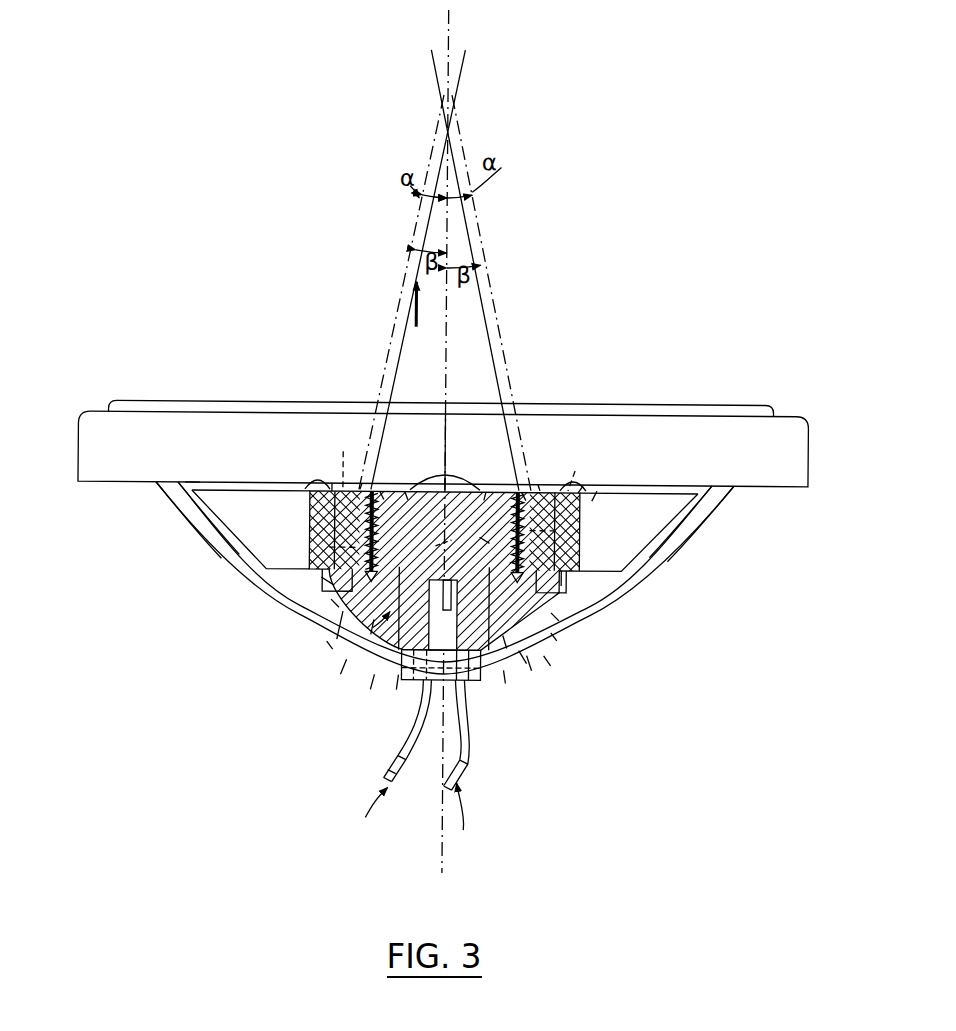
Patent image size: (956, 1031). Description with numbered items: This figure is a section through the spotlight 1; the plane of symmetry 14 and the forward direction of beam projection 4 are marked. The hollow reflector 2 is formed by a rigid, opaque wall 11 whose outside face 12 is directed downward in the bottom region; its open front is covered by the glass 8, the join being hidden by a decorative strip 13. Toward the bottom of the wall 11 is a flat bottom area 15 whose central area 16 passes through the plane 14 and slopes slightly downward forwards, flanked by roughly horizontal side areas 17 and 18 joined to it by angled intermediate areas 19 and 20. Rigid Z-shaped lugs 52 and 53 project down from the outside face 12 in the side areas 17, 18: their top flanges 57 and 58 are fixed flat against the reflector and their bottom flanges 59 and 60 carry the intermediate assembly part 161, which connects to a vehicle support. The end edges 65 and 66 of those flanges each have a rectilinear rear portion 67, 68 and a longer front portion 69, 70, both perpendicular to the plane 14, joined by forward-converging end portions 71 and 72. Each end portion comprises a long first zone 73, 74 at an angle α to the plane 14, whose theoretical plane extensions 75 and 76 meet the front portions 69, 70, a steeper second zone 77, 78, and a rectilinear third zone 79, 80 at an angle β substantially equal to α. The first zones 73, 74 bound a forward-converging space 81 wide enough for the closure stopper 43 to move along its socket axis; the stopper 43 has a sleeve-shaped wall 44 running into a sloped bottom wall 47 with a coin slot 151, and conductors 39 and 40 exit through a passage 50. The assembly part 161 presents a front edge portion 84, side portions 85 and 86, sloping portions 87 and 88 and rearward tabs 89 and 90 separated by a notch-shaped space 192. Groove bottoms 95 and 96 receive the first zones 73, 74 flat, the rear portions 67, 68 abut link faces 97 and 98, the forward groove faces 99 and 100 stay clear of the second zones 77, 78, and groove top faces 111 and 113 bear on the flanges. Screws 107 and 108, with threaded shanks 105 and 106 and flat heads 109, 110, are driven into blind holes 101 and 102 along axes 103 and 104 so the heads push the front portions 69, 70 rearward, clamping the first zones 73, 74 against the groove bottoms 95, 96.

The spotlight 1 is at (443, 579).
The reflector 2 is at (427, 573).
The direction of forward vehicle travel 4 is at (387, 301).
The glass 8 is at (442, 369).
The wall 11 is at (178, 520).
The outside face 12 is at (704, 527).
The decorative strip 13 is at (449, 410).
The plane of symmetry 14 is at (494, 442).
The bottom area 15 is at (559, 686).
The central area 16 is at (330, 701).
The side area 17 is at (212, 547).
The side area 18 is at (666, 552).
The intermediate area 19 is at (303, 675).
The intermediate area 20 is at (590, 640).
The electrical conductor 39 is at (360, 811).
The electrical conductor 40 is at (457, 821).
The stopper 43 is at (361, 713).
The sleeve-shaped wall 44 is at (368, 626).
The bottom wall 47 is at (477, 735).
The passage 50 is at (424, 731).
The lug 52 is at (169, 422).
The lug 53 is at (658, 504).
The top flange 57 is at (251, 466).
The top flange 58 is at (639, 471).
The bottom flange 59 is at (255, 426).
The bottom flange 60 is at (614, 478).
The edge 65 is at (306, 632).
The edge 66 is at (590, 663).
The rear portion 67 is at (290, 607).
The rear portion 68 is at (581, 587).
The front portion 69 is at (322, 452).
The front portion 70 is at (590, 455).
The end portion 71 is at (445, 469).
The end portion 72 is at (465, 463).
The first zone 73 is at (334, 652).
The first zone 74 is at (590, 692).
The theoretical plane extension 75 is at (378, 292).
The theoretical plane extension 76 is at (511, 293).
The second zone 77 is at (396, 460).
The second zone 78 is at (547, 462).
The third zone 79 is at (364, 423).
The third zone 80 is at (551, 427).
The space 81 is at (387, 713).
The front edge portion 84 is at (463, 424).
The side portion 85 is at (303, 527).
The side portion 86 is at (584, 528).
The sloping portion 87 is at (367, 663).
The sloping portion 88 is at (517, 674).
The tab 89 is at (438, 690).
The tab 90 is at (475, 688).
The groove bottom 95 is at (321, 529).
The groove bottom 96 is at (562, 533).
The link face 97 is at (321, 557).
The link face 98 is at (562, 566).
The groove face 99 is at (340, 508).
The groove face 100 is at (560, 531).
The blind hole 101 is at (425, 463).
The blind hole 102 is at (484, 457).
The axis 103 is at (428, 545).
The axis 104 is at (472, 527).
The threaded shank 105 is at (454, 575).
The threaded shank 106 is at (460, 605).
The screw 107 is at (409, 269).
The screw 108 is at (524, 270).
The flat head 109 is at (341, 419).
The right lens line 110 is at (560, 427).
The top face 111 is at (351, 458).
The top face 113 is at (610, 463).
The slot 151 is at (525, 714).
The intermediate assembly part 161 is at (555, 701).
The notch-shaped space 192 is at (407, 784).